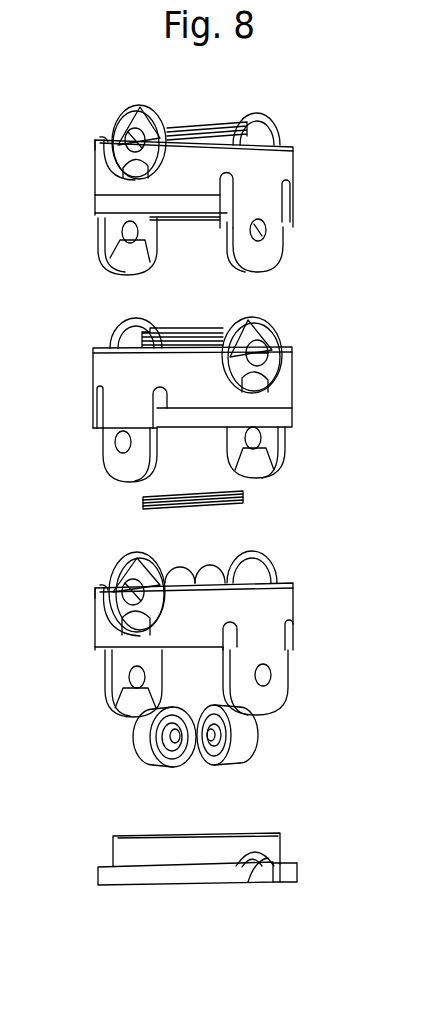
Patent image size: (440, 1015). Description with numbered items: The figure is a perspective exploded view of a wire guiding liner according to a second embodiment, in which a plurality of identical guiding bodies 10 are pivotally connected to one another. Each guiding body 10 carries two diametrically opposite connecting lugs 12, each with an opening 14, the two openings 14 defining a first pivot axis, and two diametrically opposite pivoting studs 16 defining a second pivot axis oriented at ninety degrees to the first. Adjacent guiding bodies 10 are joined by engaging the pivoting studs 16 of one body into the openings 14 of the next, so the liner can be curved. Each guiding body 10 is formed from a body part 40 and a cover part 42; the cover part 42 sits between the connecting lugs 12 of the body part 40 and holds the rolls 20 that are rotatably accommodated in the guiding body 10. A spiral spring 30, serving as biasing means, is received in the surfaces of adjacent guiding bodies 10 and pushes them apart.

The guiding body 10 is at (316, 136).
The connecting lug 12 is at (270, 248).
The opening 14 is at (265, 230).
The pivoting stud 16 is at (120, 137).
The roll 20 is at (138, 748).
The spiral spring 30 is at (203, 123).
The body part 40 is at (107, 185).
The cover part 42 is at (102, 207).